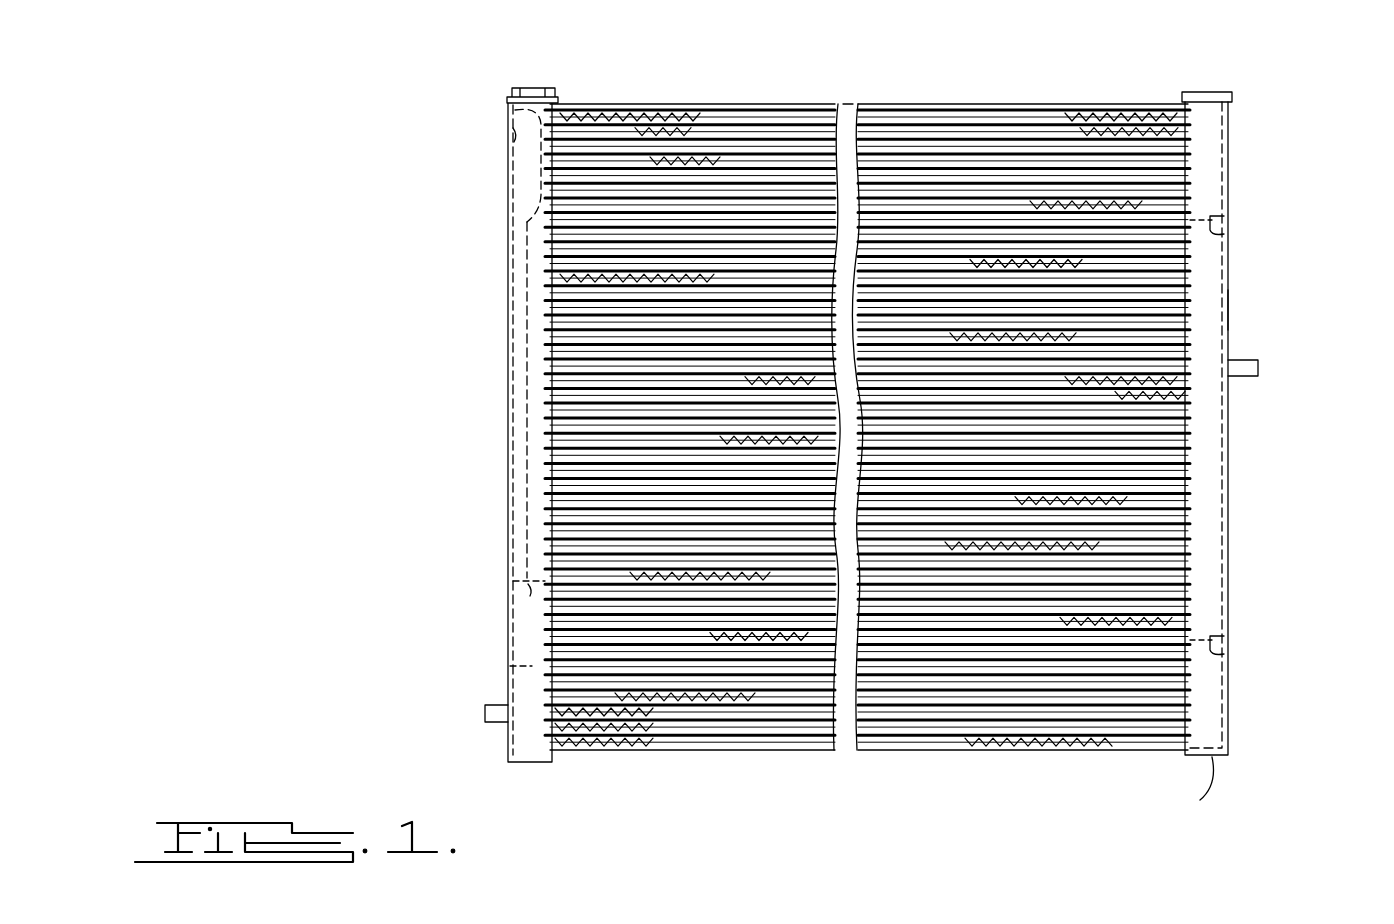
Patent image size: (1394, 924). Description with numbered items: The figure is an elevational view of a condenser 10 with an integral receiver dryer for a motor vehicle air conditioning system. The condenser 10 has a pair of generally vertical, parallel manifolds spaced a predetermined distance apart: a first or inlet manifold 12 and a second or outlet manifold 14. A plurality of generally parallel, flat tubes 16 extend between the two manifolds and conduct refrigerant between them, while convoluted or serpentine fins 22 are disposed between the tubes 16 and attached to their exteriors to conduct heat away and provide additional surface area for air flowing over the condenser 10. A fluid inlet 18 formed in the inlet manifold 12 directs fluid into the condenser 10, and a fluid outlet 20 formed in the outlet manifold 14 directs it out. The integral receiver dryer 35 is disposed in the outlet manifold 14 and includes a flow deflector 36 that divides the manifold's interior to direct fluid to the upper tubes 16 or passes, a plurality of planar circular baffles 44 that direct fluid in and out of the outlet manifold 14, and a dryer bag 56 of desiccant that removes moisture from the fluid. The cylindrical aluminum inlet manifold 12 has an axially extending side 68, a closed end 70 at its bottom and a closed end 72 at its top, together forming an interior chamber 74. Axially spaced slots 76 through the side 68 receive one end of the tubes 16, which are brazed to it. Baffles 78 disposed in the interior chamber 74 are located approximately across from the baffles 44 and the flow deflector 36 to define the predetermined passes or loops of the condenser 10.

The condenser 10 is at (370, 154).
The inlet manifold 12 is at (1233, 281).
The outlet manifold 14 is at (508, 237).
The tubes 16 is at (1175, 525).
The fluid inlet 18 is at (1260, 368).
The fluid outlet 20 is at (485, 712).
The fins 22 is at (1110, 405).
The receiver dryer 35 is at (503, 407).
The flow deflector 36 is at (520, 330).
The baffles 44 is at (510, 663).
The dryer bag 56 is at (510, 133).
The side 68 is at (1228, 183).
The closed end 70 is at (1219, 792).
The closed end 72 is at (1230, 100).
The interior chamber 74 is at (1210, 313).
The slots 76 is at (1195, 118).
The baffles 78 is at (1285, 655).